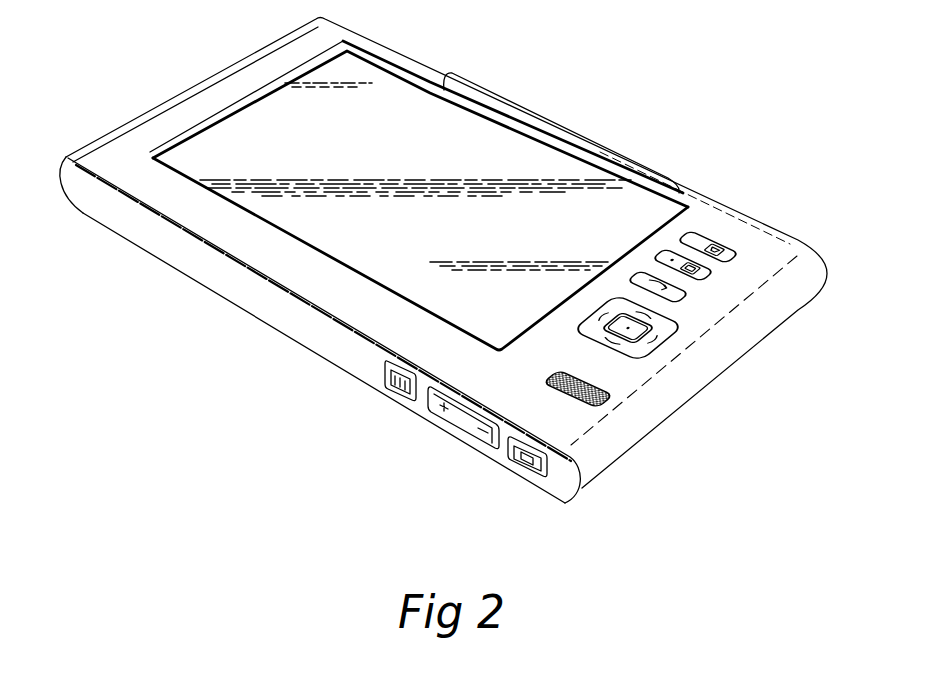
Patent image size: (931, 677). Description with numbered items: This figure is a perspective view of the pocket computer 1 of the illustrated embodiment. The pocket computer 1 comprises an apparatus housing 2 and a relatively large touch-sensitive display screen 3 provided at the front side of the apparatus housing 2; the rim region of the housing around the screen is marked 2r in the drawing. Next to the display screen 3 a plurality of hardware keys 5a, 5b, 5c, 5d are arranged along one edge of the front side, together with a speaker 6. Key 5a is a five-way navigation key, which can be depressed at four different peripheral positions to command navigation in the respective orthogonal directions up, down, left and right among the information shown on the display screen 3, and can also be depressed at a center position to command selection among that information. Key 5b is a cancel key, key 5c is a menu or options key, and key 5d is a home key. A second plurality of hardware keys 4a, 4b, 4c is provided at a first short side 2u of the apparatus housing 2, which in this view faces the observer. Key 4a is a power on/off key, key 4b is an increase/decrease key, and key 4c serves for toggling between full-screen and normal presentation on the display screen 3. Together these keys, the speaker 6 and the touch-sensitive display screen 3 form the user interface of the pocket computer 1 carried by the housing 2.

The pocket computer 1 is at (439, 262).
The apparatus housing 2 is at (439, 261).
The housing rim / upper edge 2r is at (260, 66).
The first short side 2u is at (324, 358).
The touch-sensitive display screen 3 is at (341, 168).
The power on/off key 4a is at (386, 382).
The increase/decrease key 4b is at (458, 420).
The full-screen toggle key 4c is at (512, 458).
The five-way navigation key 5a is at (652, 361).
The cancel key 5b is at (683, 297).
The menu or options key 5c is at (711, 282).
The home key 5d is at (735, 261).
The speaker 6 is at (600, 405).